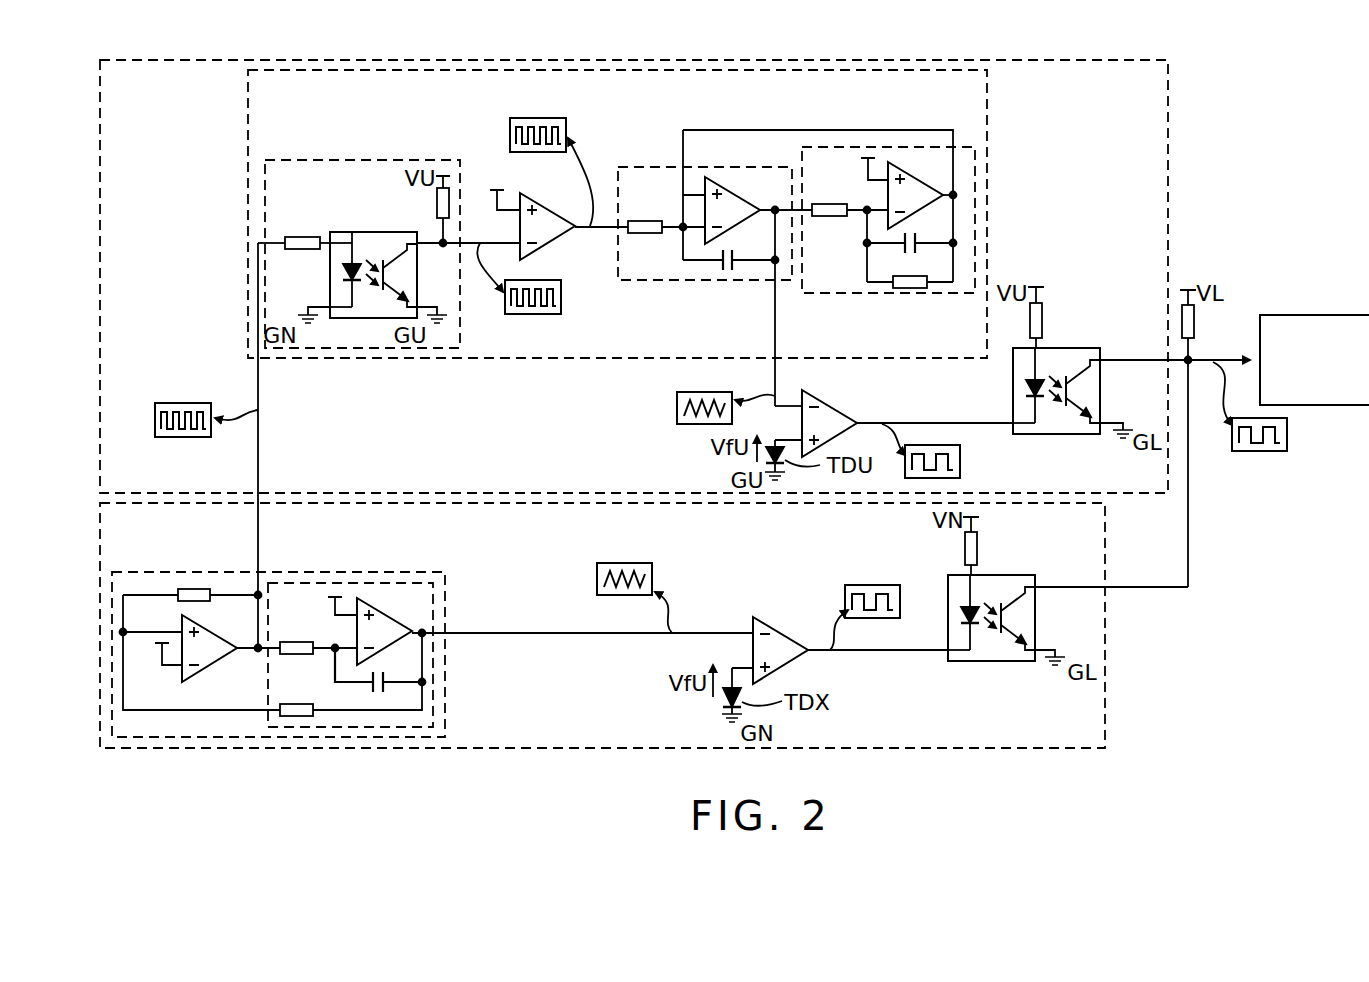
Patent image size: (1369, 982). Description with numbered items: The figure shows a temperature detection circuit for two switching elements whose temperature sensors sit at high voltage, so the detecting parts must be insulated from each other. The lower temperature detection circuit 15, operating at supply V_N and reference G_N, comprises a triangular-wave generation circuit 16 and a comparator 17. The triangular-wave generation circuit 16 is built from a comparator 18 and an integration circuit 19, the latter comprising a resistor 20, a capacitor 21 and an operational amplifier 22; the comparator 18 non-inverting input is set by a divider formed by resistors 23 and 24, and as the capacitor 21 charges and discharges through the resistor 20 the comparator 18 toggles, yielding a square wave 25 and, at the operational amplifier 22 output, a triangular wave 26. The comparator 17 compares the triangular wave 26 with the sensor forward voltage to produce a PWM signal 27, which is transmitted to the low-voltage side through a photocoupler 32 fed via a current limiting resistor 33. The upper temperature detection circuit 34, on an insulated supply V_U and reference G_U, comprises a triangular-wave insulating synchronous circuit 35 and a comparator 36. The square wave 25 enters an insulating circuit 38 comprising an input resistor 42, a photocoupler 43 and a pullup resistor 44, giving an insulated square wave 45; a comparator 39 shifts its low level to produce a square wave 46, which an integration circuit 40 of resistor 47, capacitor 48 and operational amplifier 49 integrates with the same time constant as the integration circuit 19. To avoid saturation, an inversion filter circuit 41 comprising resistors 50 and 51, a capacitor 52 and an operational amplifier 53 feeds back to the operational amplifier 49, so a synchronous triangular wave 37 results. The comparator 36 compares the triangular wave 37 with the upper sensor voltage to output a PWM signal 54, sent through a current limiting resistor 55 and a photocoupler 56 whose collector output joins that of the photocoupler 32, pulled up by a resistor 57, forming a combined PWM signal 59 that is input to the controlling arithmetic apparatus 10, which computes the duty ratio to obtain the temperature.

The controlling arithmetic apparatus 10 is at (1350, 405).
The temperature detection circuit 15 is at (1105, 697).
The triangular-wave generation circuit 16 is at (445, 710).
The comparator 17 is at (770, 632).
The comparator 18 is at (210, 668).
The integration circuit 19 is at (433, 673).
The resistor 20 is at (300, 655).
The capacitor 21 is at (371, 687).
The operational amplifier 22 is at (393, 624).
The resistor 23 is at (285, 704).
The resistor 24 is at (196, 588).
The square wave 25 is at (175, 403).
The triangular wave 26 is at (597, 580).
The PWM signal 27 is at (883, 585).
The photocoupler 32 is at (1015, 661).
The current limiting resistor 33 is at (978, 548).
The temperature detection circuit 34 is at (1168, 173).
The triangular-wave insulating synchronous circuit 35 is at (987, 128).
The comparator 36 is at (823, 403).
The triangular wave 37 is at (677, 407).
The insulating circuit 38 is at (460, 332).
The comparator 39 is at (555, 240).
The integration circuit 40 is at (638, 280).
The inversion filter circuit 41 is at (837, 293).
The input resistor 42 is at (306, 237).
The photocoupler 43 is at (352, 232).
The pullup resistor 44 is at (437, 206).
The square wave 45 is at (561, 298).
The square wave 46 is at (529, 118).
The resistor 47 is at (645, 235).
The capacitor 48 is at (730, 272).
The operational amplifier 49 is at (735, 193).
The resistor 50 is at (830, 217).
The resistor 51 is at (905, 290).
The capacitor 52 is at (913, 255).
The operational amplifier 53 is at (905, 168).
The PWM signal 54 is at (960, 463).
The current limiting resistor 55 is at (1043, 320).
The photocoupler 56 is at (1085, 434).
The resistor 57 is at (1196, 326).
The PWM signal 59 is at (1253, 452).